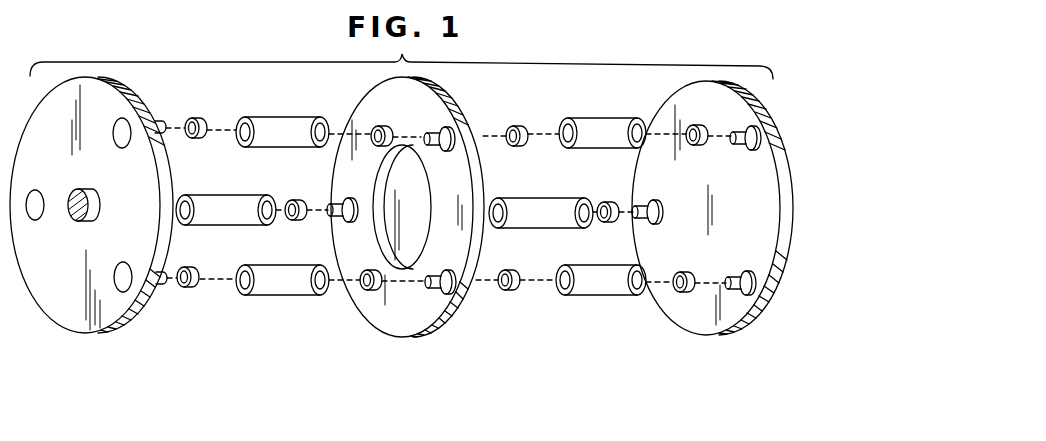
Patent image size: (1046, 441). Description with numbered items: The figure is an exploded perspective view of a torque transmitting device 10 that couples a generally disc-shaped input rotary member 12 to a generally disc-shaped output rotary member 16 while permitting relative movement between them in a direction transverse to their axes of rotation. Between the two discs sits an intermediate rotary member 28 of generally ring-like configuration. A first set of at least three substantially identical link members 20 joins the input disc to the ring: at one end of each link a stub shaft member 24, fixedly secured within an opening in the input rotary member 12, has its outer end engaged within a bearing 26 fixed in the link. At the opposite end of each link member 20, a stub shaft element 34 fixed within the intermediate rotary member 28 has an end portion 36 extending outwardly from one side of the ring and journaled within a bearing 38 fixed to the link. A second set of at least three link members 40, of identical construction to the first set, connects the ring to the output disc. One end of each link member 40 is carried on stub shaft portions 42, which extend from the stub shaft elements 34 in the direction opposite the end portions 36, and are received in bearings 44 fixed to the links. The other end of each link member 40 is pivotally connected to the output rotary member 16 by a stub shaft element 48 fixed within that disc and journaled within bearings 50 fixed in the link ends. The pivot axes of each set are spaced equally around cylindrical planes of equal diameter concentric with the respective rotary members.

The torque transmitting device 10 is at (556, 61).
The input rotary member 12 is at (100, 313).
The output rotary member 16 is at (685, 318).
The link members 20 is at (306, 94).
The stub shaft member 24 is at (160, 118).
The bearing 26 is at (202, 139).
The intermediate rotary member 28 is at (412, 323).
The stub shaft element 34 is at (438, 128).
The end portion 36 is at (335, 203).
The bearing 38 is at (388, 130).
The link members 40 is at (607, 273).
The stub shaft portions 42 is at (482, 145).
The bearings 44 is at (518, 124).
The stub shaft element 48 is at (743, 125).
The bearings 50 is at (620, 178).